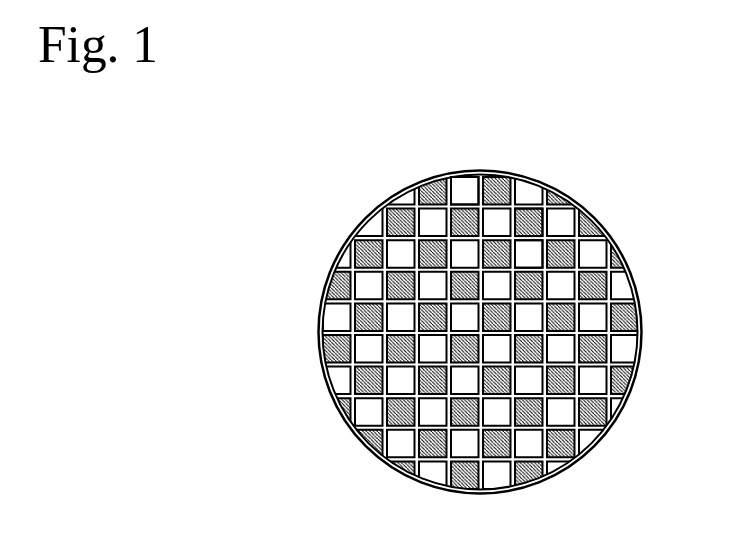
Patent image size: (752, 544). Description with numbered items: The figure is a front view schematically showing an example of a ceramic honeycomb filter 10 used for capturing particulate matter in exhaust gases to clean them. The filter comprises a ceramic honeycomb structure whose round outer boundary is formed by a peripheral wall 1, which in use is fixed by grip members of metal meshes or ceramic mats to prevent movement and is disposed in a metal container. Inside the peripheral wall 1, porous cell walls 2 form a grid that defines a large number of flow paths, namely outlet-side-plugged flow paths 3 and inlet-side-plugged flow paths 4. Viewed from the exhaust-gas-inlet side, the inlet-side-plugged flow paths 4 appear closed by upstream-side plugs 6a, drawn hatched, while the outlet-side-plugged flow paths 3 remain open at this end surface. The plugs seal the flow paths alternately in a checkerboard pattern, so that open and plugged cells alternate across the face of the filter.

The ceramic honeycomb filter 10 is at (323, 159).
The peripheral wall 1 is at (400, 192).
The porous cell walls 2 is at (467, 203).
The outlet-side-plugged flow paths 3 is at (532, 253).
The inlet-side-plugged flow paths 4 is at (543, 225).
The upstream-side plugs 6a is at (527, 222).